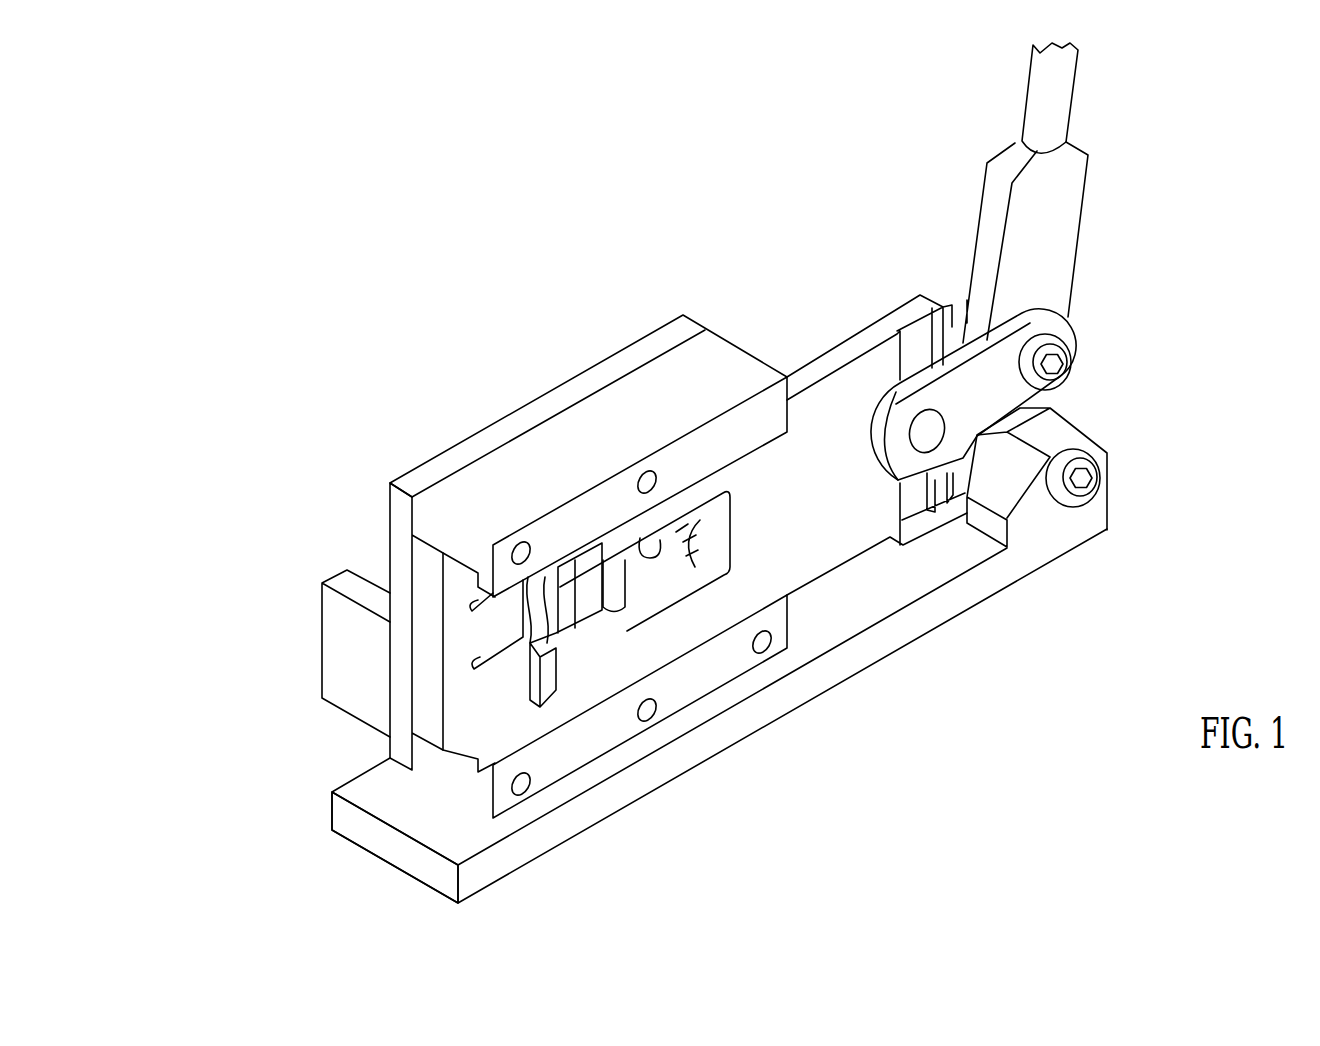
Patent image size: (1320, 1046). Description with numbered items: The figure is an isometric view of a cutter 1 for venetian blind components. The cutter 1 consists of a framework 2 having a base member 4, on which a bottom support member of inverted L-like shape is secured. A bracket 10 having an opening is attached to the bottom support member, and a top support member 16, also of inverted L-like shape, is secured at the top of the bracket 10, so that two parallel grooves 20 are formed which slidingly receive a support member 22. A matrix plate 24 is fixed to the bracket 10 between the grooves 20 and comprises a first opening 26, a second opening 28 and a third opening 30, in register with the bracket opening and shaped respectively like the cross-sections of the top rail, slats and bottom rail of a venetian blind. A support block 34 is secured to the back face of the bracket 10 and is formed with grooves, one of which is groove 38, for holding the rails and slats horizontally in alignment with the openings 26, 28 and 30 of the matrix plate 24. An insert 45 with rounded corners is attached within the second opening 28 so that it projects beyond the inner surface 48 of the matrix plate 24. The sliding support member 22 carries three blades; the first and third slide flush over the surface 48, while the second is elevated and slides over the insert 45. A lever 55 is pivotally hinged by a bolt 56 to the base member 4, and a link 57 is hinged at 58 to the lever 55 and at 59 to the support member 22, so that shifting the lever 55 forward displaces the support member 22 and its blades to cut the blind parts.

The cutter 1 is at (779, 236).
The framework 2 is at (334, 762).
The base member 4 is at (588, 808).
The bracket 10 is at (452, 462).
The top support member 16 is at (713, 360).
The parallel grooves 20 is at (392, 583).
The support member 22 is at (853, 392).
The matrix plate 24 is at (467, 688).
The first opening 26 is at (500, 647).
The second opening 28 is at (595, 582).
The third opening 30 is at (633, 548).
The support block 34 is at (338, 613).
The groove 38 is at (445, 568).
The insert 45 is at (592, 632).
The inner surface 48 is at (517, 701).
The lever 55 is at (1057, 100).
The bolt 56 is at (1108, 455).
The link 57 is at (987, 365).
The hinge 58 is at (1077, 338).
The hinge 59 is at (925, 438).